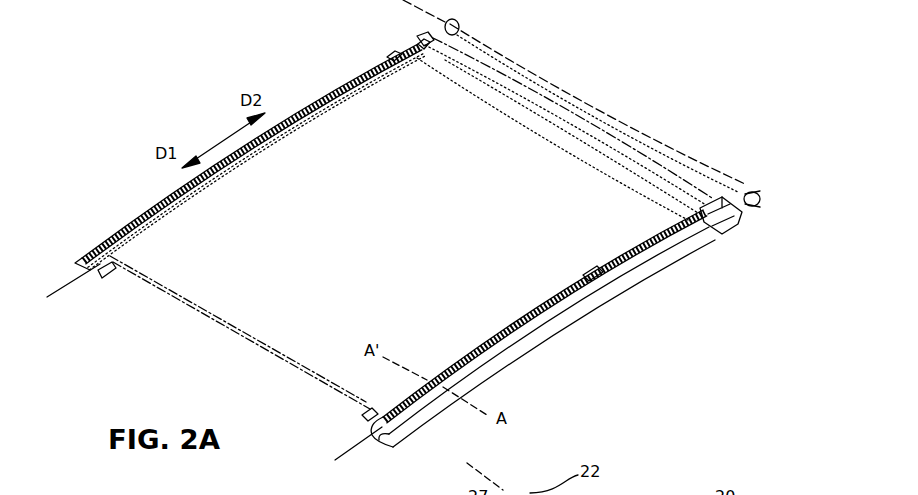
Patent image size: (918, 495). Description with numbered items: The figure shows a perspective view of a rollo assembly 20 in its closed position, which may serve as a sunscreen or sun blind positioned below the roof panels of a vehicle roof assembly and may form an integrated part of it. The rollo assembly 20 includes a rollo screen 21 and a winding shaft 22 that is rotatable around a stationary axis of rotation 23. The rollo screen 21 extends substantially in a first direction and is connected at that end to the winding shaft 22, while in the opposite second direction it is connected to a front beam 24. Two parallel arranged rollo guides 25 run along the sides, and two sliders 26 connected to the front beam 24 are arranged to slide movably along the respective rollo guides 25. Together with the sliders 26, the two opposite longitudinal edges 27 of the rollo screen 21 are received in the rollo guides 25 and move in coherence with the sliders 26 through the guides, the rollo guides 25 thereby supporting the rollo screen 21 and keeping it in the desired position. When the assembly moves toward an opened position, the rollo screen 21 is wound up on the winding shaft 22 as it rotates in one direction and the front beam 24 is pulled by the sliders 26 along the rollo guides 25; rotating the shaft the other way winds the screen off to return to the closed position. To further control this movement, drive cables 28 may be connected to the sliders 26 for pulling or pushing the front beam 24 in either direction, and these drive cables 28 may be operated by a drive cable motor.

The rollo assembly 20 is at (619, 89).
The rollo screen 21 is at (440, 246).
The winding shaft 22 is at (766, 199).
The stationary axis of rotation 23 is at (770, 208).
The front beam 24 is at (198, 308).
The rollo guides 25 is at (145, 208).
The sliders 26 is at (104, 284).
The longitudinal edges 27 is at (357, 78).
The drive cables 28 is at (45, 290).